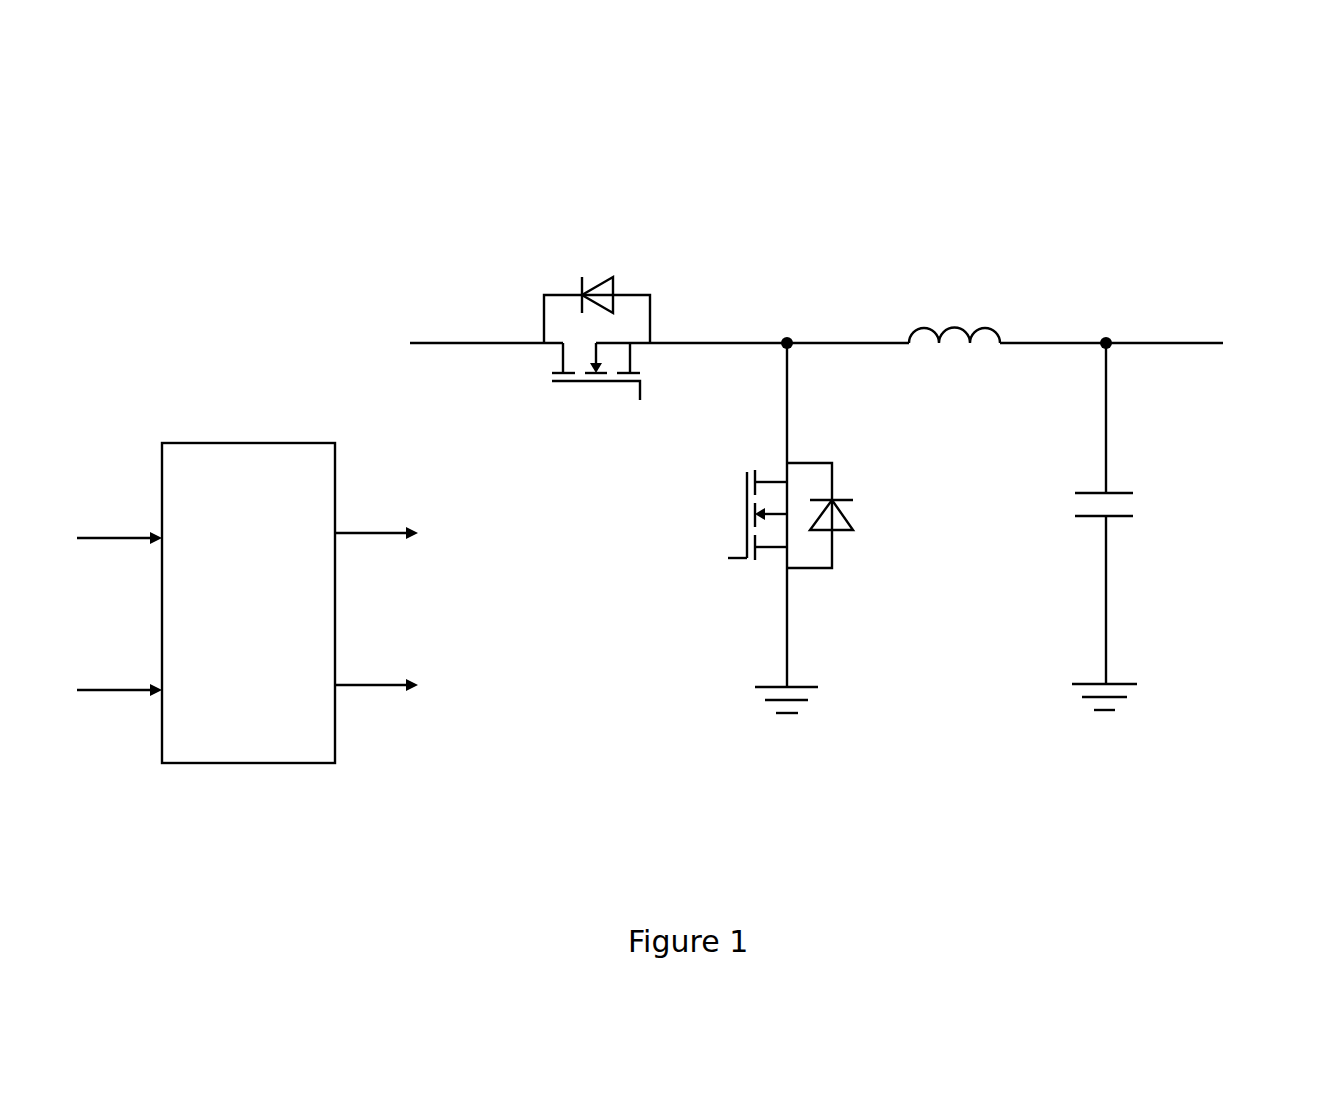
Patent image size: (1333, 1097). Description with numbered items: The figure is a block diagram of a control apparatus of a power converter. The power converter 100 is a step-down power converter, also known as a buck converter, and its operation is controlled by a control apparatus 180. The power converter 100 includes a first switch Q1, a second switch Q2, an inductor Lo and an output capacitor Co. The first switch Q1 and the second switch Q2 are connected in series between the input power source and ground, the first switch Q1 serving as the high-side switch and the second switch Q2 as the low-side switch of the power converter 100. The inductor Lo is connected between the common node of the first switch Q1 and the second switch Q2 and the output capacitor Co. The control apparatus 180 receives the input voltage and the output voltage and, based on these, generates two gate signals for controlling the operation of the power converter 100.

The power converter 100 is at (1250, 100).
The control apparatus 180 is at (232, 619).
The first switch Q1 is at (575, 340).
The second switch Q2 is at (790, 540).
The inductor Lo is at (954, 313).
The output capacitor Co is at (1124, 506).